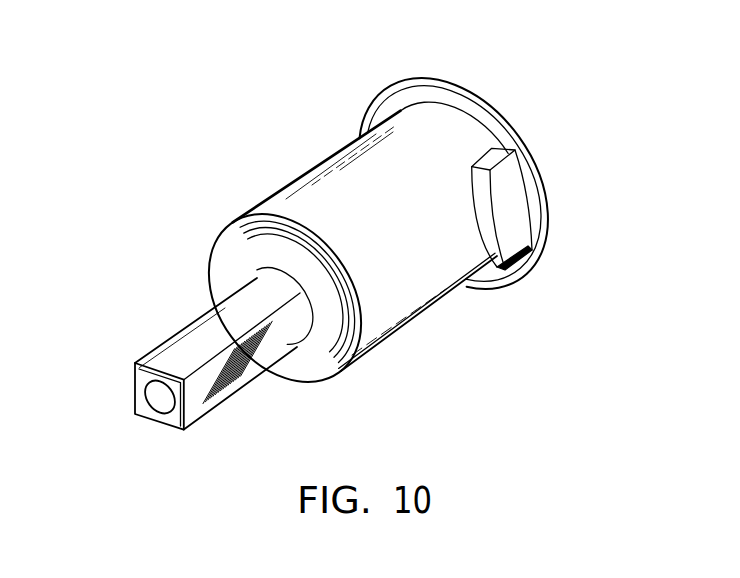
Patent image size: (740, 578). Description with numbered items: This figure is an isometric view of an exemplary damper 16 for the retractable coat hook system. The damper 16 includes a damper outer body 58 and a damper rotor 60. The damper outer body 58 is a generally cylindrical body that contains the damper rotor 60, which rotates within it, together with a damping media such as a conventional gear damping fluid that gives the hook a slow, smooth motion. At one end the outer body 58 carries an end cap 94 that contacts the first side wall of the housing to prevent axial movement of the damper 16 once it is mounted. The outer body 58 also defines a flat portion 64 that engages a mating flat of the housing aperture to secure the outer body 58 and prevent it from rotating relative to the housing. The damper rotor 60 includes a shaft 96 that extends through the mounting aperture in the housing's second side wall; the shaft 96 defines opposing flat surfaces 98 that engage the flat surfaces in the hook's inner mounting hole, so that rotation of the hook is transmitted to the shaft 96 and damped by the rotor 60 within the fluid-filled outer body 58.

The damper 16 is at (348, 173).
The damper outer body 58 is at (447, 277).
The damper rotor 60 is at (213, 330).
The flat portion 64 is at (513, 197).
The end cap 94 is at (486, 104).
The shaft 96 is at (167, 352).
The opposing flat surfaces 98 is at (133, 381).